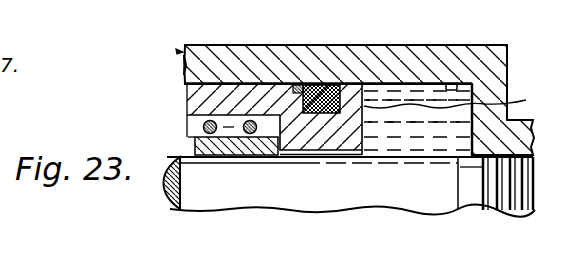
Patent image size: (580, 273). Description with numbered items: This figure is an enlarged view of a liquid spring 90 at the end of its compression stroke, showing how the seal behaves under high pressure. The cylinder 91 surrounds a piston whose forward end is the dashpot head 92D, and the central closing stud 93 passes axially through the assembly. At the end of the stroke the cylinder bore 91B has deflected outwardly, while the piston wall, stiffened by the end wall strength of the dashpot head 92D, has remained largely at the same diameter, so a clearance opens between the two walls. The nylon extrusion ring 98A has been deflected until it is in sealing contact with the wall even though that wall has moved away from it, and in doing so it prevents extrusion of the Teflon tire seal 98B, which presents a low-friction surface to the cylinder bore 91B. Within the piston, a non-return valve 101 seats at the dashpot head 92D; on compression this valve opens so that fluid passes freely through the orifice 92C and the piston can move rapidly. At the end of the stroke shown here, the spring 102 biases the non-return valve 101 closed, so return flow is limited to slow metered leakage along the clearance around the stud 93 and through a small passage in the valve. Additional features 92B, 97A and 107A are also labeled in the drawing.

The liquid spring 90 is at (182, 52).
The cylinder 91 is at (228, 50).
The cylinder bore 91B is at (448, 84).
The piston body portion 92B is at (258, 82).
The orifice 92C is at (351, 152).
The dashpot head 92D is at (464, 119).
The central closing stud 93 is at (192, 200).
The passage 97A is at (306, 152).
The nylon extrusion ring 98A is at (297, 83).
The Teflon tire seal 98B is at (328, 83).
The non-return valve 101 is at (195, 143).
The spring 102 is at (188, 121).
The shaft surface line 107A is at (213, 159).